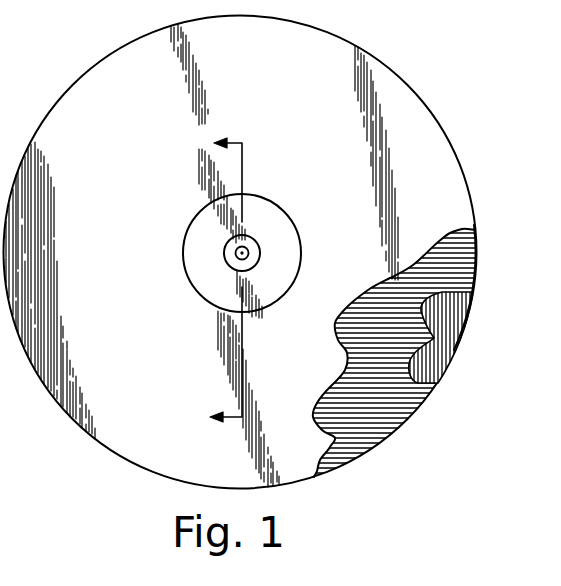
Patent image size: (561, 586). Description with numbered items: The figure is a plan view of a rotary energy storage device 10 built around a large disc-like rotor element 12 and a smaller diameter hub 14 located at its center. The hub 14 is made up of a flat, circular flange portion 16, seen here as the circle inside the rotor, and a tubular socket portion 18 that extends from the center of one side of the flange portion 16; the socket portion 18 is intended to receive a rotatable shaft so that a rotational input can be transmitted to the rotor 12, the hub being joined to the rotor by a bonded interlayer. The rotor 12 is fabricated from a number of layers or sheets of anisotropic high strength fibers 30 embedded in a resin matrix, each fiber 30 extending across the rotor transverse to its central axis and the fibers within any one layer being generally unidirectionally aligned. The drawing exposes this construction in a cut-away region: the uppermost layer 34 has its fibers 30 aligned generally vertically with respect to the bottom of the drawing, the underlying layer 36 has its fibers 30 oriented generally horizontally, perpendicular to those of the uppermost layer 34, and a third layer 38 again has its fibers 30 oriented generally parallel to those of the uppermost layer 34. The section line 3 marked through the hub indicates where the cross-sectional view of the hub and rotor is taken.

The section line 3- 3 is at (216, 281).
The rotary energy storage device 10 is at (436, 51).
The rotor element 12 is at (452, 127).
The hub 14 is at (290, 204).
The flange portion 16 is at (300, 252).
The tubular socket portion 18 is at (236, 247).
The high strength fibers 30 is at (476, 232).
The uppermost layer 34 is at (305, 479).
The underlying layer 36 is at (389, 437).
The third layer 38 is at (437, 381).